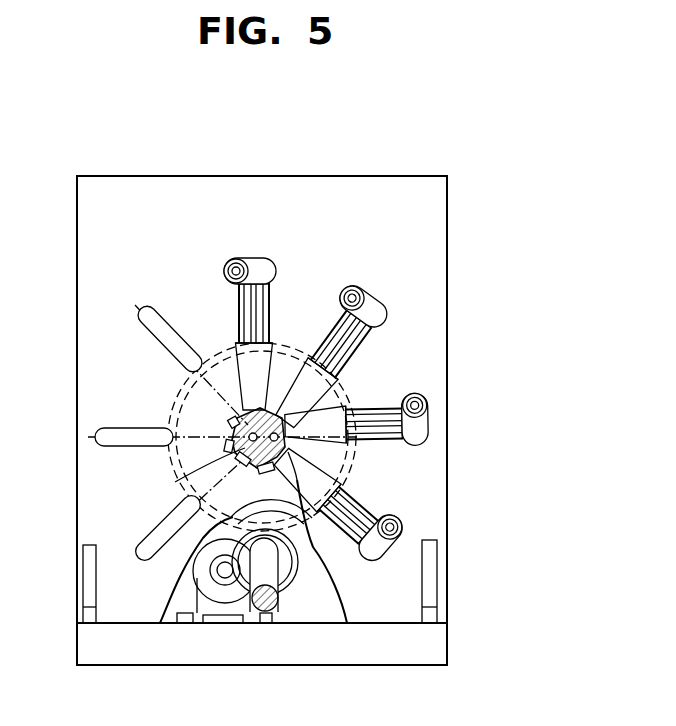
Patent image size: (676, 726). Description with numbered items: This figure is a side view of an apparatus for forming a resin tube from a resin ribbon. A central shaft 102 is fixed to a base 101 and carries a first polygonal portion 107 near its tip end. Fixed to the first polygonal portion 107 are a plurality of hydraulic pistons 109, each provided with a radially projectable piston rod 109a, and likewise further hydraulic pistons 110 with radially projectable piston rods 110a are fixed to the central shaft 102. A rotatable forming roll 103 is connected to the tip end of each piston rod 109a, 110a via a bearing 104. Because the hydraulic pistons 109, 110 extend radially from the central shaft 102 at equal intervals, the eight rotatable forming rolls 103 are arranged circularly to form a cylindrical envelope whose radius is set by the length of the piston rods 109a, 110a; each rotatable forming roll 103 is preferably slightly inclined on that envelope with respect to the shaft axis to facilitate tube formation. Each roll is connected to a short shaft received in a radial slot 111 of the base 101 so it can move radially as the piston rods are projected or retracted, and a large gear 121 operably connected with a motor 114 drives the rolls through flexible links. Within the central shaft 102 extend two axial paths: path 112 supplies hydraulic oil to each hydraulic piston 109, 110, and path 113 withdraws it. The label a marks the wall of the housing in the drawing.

The base 101 is at (455, 212).
The central shaft 102 is at (338, 410).
The rotatable forming roll 103 is at (265, 262).
The bearing 104 is at (232, 263).
The first polygonal portion 107 is at (240, 416).
The hydraulic piston 109 is at (246, 358).
The piston rod 109a is at (462, 382).
The hydraulic piston 110 is at (343, 372).
The piston rod 110a is at (268, 300).
The radial slot 111 is at (153, 331).
The path 112 is at (200, 466).
The path 113 is at (302, 497).
The motor 114 is at (193, 625).
The large gear 121 is at (175, 412).
The housing wall a is at (77, 262).